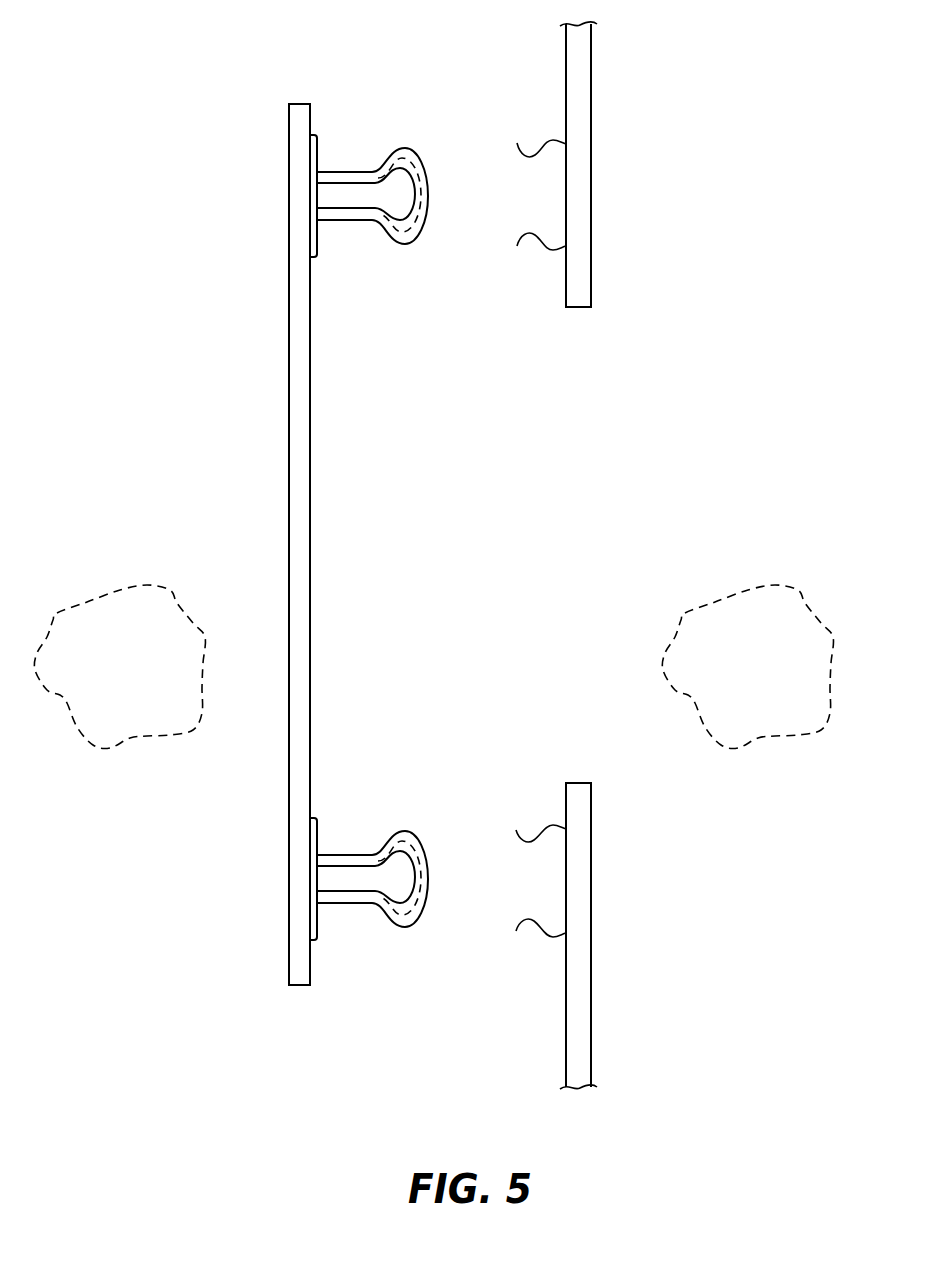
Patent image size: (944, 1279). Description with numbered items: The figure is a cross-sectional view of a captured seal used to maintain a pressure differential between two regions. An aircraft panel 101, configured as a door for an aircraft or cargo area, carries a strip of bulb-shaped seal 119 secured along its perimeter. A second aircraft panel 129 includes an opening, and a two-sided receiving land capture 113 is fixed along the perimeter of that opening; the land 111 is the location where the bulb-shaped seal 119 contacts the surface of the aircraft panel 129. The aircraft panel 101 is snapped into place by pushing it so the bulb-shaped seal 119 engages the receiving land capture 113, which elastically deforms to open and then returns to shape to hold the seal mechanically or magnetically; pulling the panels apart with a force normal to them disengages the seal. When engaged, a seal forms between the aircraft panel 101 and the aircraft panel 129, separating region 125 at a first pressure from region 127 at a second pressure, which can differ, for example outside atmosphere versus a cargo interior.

The aircraft panel 101 is at (300, 432).
The bulb-shaped seal 119 is at (403, 145).
The aircraft panel 129 is at (585, 105).
The land 111 is at (568, 207).
The receiving land capture 113 is at (547, 245).
The region 125 is at (119, 667).
The region 127 is at (747, 667).